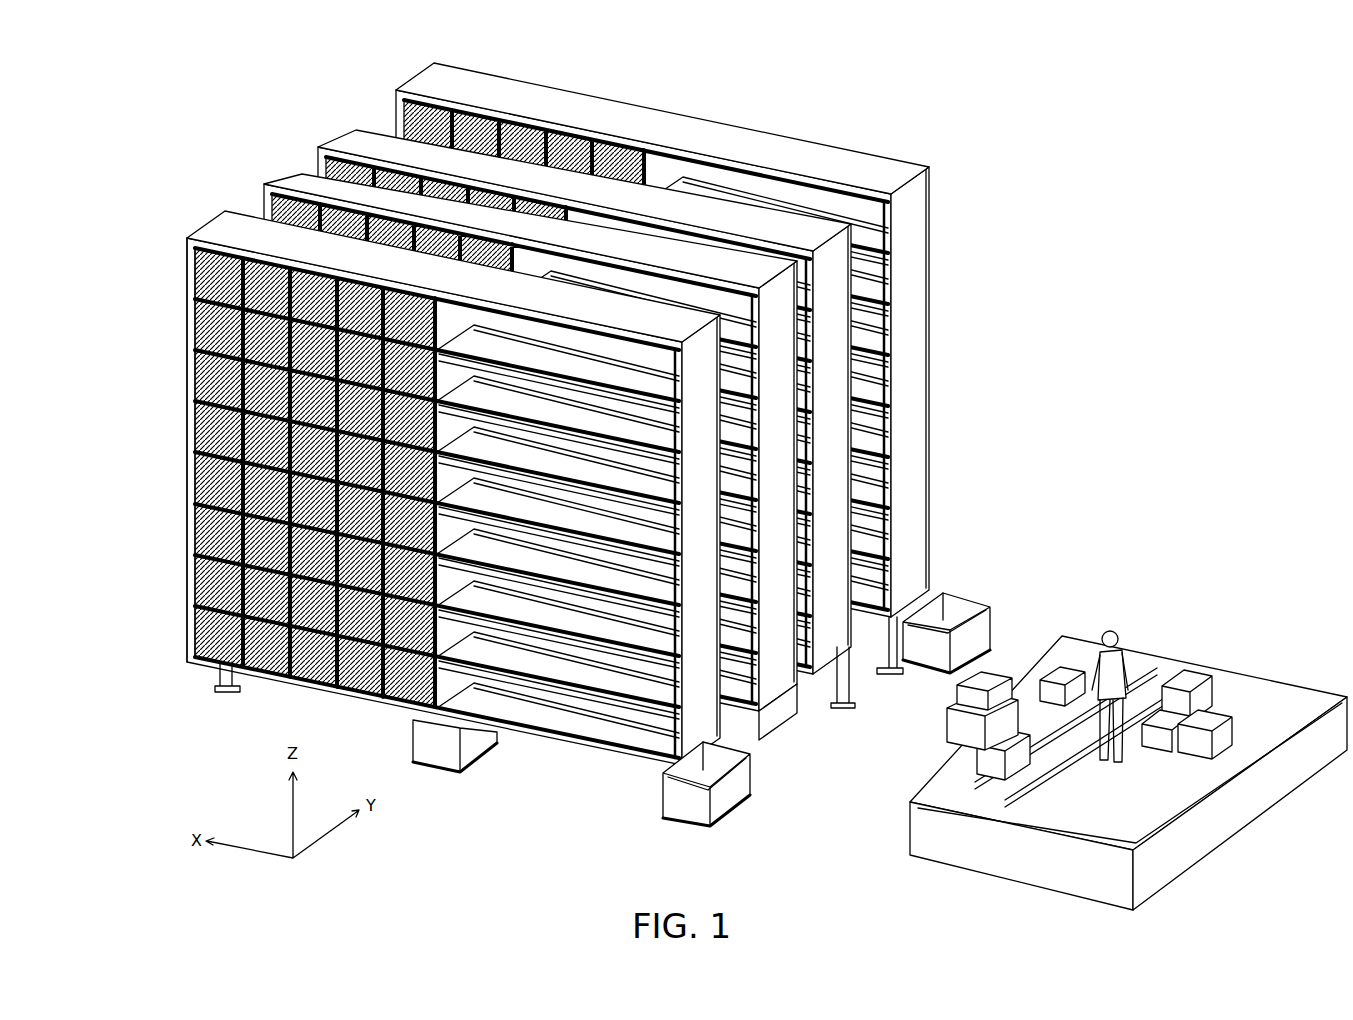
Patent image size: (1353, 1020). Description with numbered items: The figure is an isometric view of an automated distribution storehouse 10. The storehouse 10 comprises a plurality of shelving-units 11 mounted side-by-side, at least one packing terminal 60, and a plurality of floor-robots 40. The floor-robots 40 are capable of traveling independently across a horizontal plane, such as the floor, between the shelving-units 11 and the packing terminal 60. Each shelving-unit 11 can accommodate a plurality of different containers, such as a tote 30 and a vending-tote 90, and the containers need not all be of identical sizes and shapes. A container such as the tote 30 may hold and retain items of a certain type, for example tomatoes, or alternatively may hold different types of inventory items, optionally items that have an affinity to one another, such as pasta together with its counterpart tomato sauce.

The automated distribution storehouse 10 is at (733, 486).
The shelving-unit 11 is at (225, 227).
The tote 30 is at (430, 757).
The floor-robot 40 is at (480, 762).
The packing terminal 60 is at (1090, 812).
The vending-tote 90 is at (190, 413).